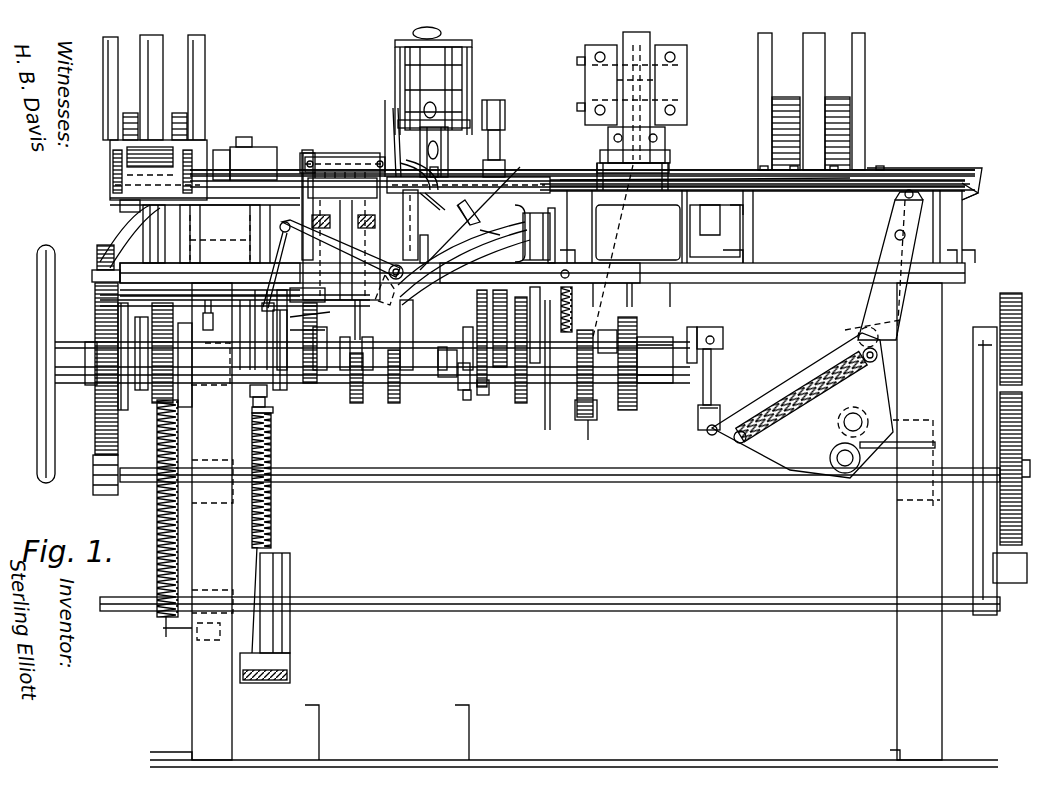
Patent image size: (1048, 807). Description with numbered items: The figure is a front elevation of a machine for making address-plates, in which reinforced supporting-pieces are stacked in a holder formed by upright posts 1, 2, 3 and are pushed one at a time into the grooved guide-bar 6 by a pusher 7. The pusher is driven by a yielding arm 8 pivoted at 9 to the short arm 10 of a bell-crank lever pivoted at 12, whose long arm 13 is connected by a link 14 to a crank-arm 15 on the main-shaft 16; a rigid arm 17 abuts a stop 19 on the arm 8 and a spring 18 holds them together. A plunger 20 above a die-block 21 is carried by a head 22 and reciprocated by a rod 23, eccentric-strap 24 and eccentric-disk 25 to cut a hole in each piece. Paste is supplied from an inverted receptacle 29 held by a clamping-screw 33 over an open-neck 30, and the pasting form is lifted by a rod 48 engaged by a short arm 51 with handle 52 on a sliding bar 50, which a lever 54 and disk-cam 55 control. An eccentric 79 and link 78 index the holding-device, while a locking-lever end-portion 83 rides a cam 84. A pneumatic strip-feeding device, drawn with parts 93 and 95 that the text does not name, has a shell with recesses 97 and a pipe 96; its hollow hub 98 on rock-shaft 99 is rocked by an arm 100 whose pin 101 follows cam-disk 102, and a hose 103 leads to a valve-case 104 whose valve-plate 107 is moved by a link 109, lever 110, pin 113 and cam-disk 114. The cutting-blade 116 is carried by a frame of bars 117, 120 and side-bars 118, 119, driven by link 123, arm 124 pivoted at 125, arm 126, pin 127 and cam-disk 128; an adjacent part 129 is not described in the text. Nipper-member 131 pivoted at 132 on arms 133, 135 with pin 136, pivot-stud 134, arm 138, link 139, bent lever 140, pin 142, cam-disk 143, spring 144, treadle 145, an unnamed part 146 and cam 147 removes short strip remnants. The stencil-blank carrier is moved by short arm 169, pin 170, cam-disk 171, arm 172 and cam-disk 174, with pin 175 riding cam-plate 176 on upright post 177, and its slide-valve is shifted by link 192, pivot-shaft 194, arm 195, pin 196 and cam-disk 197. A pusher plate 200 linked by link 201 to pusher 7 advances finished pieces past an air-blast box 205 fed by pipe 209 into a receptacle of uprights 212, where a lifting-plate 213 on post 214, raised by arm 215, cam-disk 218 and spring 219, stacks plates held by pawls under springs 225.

The upright post 1 is at (863, 80).
The upright post 2 is at (815, 67).
The upright post 3 is at (766, 88).
The guide-bar 6 is at (742, 180).
The pusher 7 is at (974, 193).
The arm 8 is at (255, 140).
The pivot 9 is at (862, 420).
The short arm 10 is at (872, 442).
The pivot 12 is at (845, 473).
The long arm 13 is at (800, 450).
The link 14 is at (712, 395).
The crank-arm 15 is at (723, 335).
The main-shaft 16 is at (550, 400).
The rigid arm 17 is at (833, 362).
The spring 18 is at (815, 398).
The stop 19 is at (880, 338).
The plunger 20 is at (655, 155).
The die-block 21 is at (705, 205).
The head 22 is at (655, 44).
The rod 23 is at (665, 170).
The eccentric-strap 24 is at (628, 410).
The eccentric-disk 25 is at (640, 385).
The receptacle 29 is at (452, 70).
The open-neck 30 is at (448, 145).
The clamping-screw 33 is at (413, 34).
The vertically movable rod 48 is at (445, 162).
The vertically sliding bar 50 is at (500, 152).
The short arm 51 is at (505, 108).
The handle 52 is at (436, 108).
The pivoted lever 54 is at (494, 338).
The disk-cam 55 is at (482, 395).
The link 78 is at (268, 395).
The eccentric 79 is at (265, 405).
The lower end-portion 83 is at (301, 327).
The cam 84 is at (280, 426).
The bar 93 is at (345, 165).
The plate 95 is at (342, 185).
The pipe 96 is at (380, 240).
The recesses 97 is at (345, 165).
The hollow hub 98 is at (340, 262).
The rock-shaft 99 is at (222, 308).
The arm 100 is at (105, 302).
The pin 101 is at (100, 286).
The cam-disk 102 is at (147, 393).
The flexible hose 103 is at (540, 273).
The valve-case 104 is at (540, 228).
The valve-plate 107 is at (520, 220).
The link 109 is at (552, 240).
The lever 110 is at (590, 287).
The pin 113 is at (551, 325).
The cam-disk 114 is at (518, 403).
The cutting-blade 116 is at (310, 150).
The horizontal bar 117 is at (388, 140).
The upright side-bar 118 is at (400, 165).
The upright side-bar 119 is at (302, 165).
The horizontal bar 120 is at (265, 298).
The link 123 is at (300, 320).
The arm 124 is at (290, 390).
The pivot 125 is at (440, 377).
The arm 126 is at (580, 420).
The pin 127 is at (593, 442).
The cam-disk 128 is at (580, 380).
The cam 129 is at (384, 290).
The nipper-member 131 is at (458, 208).
The pivot 132 is at (480, 212).
The arm 133 is at (445, 258).
The pivot-stud 134 is at (421, 225).
The arm 135 is at (498, 228).
The pin 136 is at (472, 207).
The arm 138 is at (341, 249).
The link 139 is at (278, 240).
The bent lever 140 is at (308, 383).
The pin 142 is at (376, 335).
The cam-disk 143 is at (356, 403).
The spring 144 is at (275, 525).
The treadle 145 is at (263, 683).
The link 146 is at (447, 194).
The cam 147 is at (433, 249).
The short arm 169 is at (447, 333).
The pin 170 is at (460, 390).
The cam-disk 171 is at (466, 400).
The arm 172 is at (421, 335).
The cam-disk 174 is at (394, 403).
The pin 175 is at (393, 125).
The cam-plate 176 is at (439, 154).
The upright post 177 is at (468, 185).
The link 192 is at (210, 235).
The pivot-shaft 194 is at (210, 282).
The arm 195 is at (175, 320).
The pin 196 is at (195, 348).
The cam-disk 197 is at (178, 410).
The plate 200 is at (555, 180).
The link 201 is at (812, 190).
The box-like structure 205 is at (268, 160).
The flexible pipe 209 is at (100, 252).
The uprights 212 is at (153, 97).
The lifting-plate 213 is at (145, 185).
The post 214 is at (148, 224).
The arm 215 is at (210, 273).
The cam-disk 218 is at (115, 395).
The spring 219 is at (150, 582).
The springs 225 is at (112, 190).